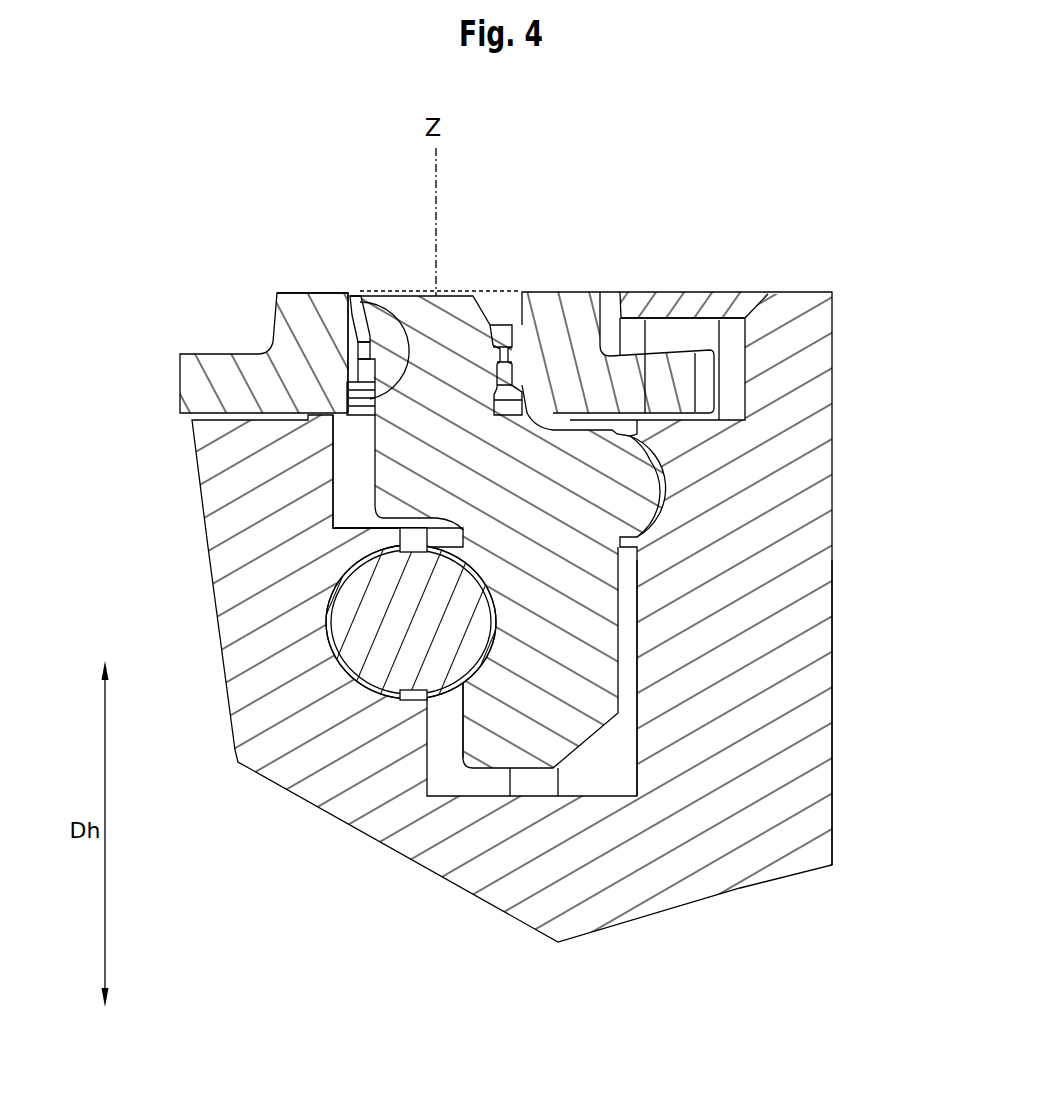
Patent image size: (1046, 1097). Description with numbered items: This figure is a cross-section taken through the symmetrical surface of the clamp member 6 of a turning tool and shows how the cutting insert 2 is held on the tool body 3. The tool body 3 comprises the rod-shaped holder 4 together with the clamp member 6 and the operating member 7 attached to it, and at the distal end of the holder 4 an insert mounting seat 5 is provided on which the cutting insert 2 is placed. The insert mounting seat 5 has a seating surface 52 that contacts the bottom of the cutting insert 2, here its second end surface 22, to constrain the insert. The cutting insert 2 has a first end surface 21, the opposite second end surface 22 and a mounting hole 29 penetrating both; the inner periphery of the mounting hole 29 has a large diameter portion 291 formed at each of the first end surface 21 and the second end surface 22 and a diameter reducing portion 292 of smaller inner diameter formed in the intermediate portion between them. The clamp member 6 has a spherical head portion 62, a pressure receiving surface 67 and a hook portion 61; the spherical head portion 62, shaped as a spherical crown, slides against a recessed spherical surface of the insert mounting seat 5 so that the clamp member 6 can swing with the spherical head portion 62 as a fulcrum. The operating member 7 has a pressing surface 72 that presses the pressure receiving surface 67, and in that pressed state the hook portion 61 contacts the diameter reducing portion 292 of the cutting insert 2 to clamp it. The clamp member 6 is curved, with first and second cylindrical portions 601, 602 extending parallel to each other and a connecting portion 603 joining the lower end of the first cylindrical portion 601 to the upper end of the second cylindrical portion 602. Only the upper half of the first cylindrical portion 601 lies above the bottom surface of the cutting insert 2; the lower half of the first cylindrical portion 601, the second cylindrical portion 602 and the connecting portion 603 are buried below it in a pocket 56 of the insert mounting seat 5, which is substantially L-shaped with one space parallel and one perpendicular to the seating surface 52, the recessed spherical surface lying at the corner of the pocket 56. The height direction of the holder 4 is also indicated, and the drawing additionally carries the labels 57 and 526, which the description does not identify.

The cutting insert 2 is at (618, 562).
The first end surface 21 is at (520, 292).
The second end surface 22 is at (500, 324).
The mounting hole 29 is at (399, 270).
The large diameter portion 291 is at (360, 298).
The diameter reducing portion 292 is at (390, 300).
The tool body 3 is at (499, 515).
The holder 4 is at (499, 515).
The insert mounting seat 5 is at (693, 322).
The clamp member 6 is at (531, 775).
The operating member 7 is at (390, 711).
The seating surface 52 is at (263, 307).
The pocket 56 is at (350, 500).
The socket wall 57 is at (355, 618).
The hook portion 61 is at (338, 412).
The spherical head portion 62 is at (655, 458).
The pressure receiving surface 67 is at (435, 622).
The pressing surface 72 is at (490, 653).
The bulge surface 526 is at (668, 490).
The first cylindrical portion 601 is at (397, 448).
The second cylindrical portion 602 is at (605, 634).
The connecting portion 603 is at (553, 445).